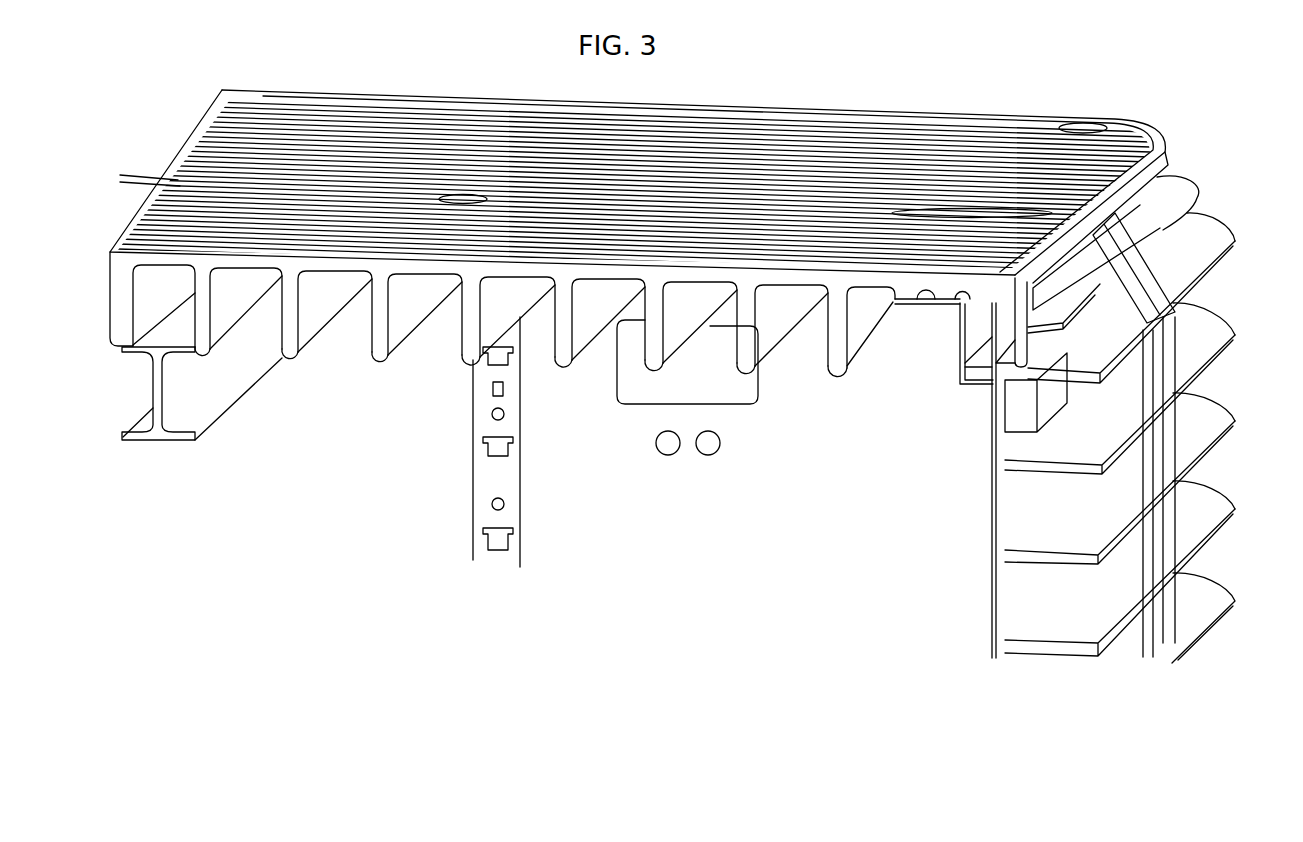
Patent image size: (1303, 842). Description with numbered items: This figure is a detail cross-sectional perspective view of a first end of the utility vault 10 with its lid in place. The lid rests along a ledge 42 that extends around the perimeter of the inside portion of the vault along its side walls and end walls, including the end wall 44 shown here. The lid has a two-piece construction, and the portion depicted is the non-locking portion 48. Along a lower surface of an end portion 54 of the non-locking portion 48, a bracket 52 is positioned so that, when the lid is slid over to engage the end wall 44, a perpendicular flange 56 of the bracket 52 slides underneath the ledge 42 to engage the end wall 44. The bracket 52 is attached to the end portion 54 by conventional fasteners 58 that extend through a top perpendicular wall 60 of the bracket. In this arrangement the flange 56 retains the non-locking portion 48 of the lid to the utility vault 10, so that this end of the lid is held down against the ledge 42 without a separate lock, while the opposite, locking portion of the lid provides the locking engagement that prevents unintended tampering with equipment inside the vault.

The utility vault 10 is at (1152, 135).
The ledge 42 is at (982, 384).
The end wall 44 is at (990, 510).
The non-locking portion 48 is at (862, 167).
The bracket 52 is at (960, 357).
The end portion 54 is at (903, 297).
The perpendicular flange 56 is at (972, 380).
The fasteners 58 is at (933, 316).
The top perpendicular wall 60 is at (888, 300).